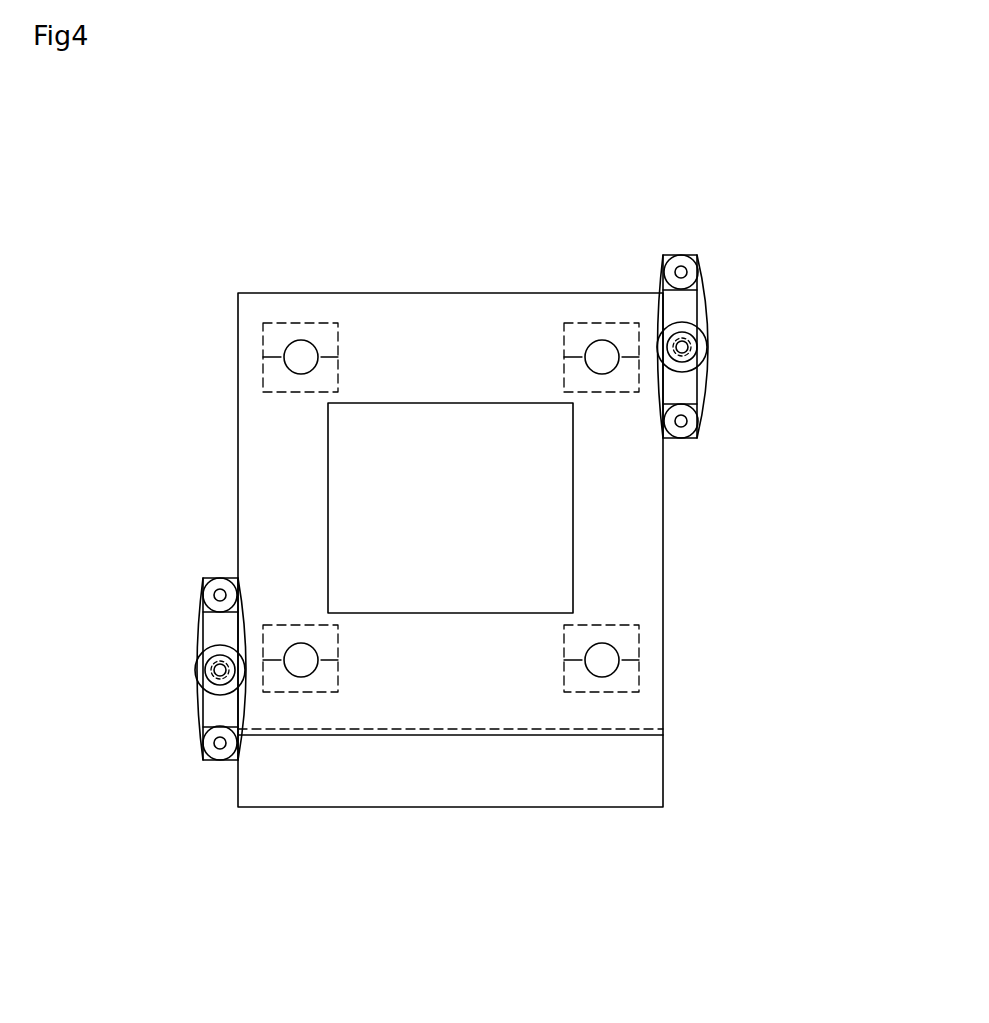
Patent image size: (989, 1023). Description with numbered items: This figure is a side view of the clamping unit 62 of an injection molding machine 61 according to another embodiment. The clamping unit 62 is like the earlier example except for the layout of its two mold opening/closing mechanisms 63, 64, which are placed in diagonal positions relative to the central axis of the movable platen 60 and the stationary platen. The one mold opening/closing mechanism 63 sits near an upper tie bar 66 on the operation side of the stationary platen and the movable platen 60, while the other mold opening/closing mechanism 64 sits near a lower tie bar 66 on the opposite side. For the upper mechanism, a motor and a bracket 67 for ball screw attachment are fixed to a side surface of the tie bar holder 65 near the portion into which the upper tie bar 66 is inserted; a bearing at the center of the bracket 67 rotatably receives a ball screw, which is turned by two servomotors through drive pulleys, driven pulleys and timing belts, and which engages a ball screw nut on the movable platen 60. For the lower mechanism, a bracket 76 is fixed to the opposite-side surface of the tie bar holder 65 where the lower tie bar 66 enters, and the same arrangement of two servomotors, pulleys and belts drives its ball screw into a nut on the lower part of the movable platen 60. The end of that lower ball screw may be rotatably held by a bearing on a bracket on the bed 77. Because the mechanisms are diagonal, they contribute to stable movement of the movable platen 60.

The movable platen 60 is at (380, 490).
The injection molding machine 61 is at (486, 218).
The clamping unit 62 is at (328, 198).
The mold opening/closing mechanism 63 is at (730, 212).
The mold opening/closing mechanism 64 is at (158, 568).
The tie bar holder 65 is at (263, 428).
The tie bar 66 is at (602, 355).
The bracket 67 is at (682, 308).
The bracket 76 is at (207, 632).
The bed 77 is at (598, 770).